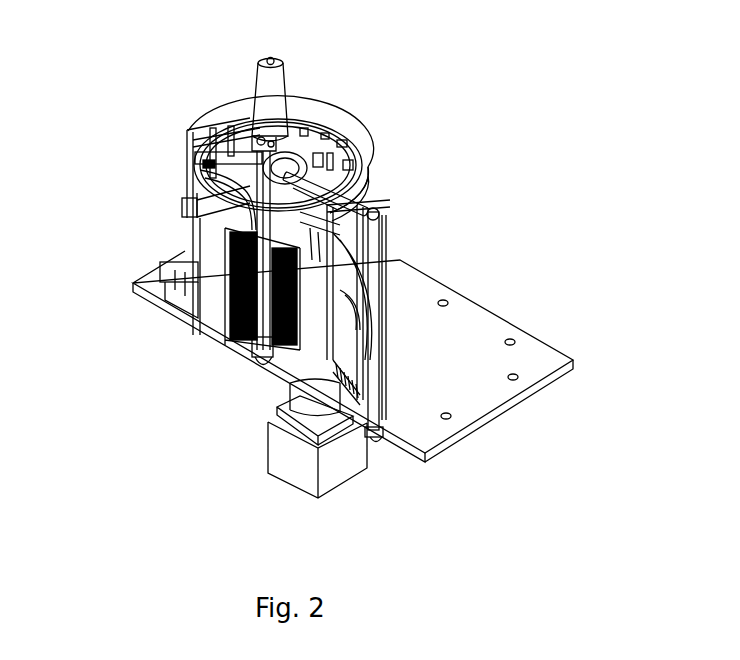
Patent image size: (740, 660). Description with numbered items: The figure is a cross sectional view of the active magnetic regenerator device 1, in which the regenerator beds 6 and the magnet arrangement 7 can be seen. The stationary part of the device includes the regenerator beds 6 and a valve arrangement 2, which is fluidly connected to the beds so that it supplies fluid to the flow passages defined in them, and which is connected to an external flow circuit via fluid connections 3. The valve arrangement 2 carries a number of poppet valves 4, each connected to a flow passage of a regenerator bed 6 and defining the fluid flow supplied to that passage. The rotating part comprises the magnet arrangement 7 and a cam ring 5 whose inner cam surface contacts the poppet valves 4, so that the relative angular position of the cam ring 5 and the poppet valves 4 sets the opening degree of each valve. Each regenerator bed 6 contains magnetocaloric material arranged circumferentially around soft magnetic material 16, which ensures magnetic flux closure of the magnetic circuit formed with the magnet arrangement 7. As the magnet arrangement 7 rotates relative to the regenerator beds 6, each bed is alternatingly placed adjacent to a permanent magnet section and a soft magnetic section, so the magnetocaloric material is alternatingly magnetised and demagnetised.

The active magnetic regenerator device 1 is at (535, 132).
The valve arrangement 2 is at (303, 122).
The fluid connections 3 is at (335, 132).
The poppet valves 4 is at (360, 187).
The cam ring 5 is at (203, 150).
The regenerator beds 6 is at (267, 343).
The magnet arrangement 7 is at (207, 263).
The soft magnetic material 16 is at (293, 287).